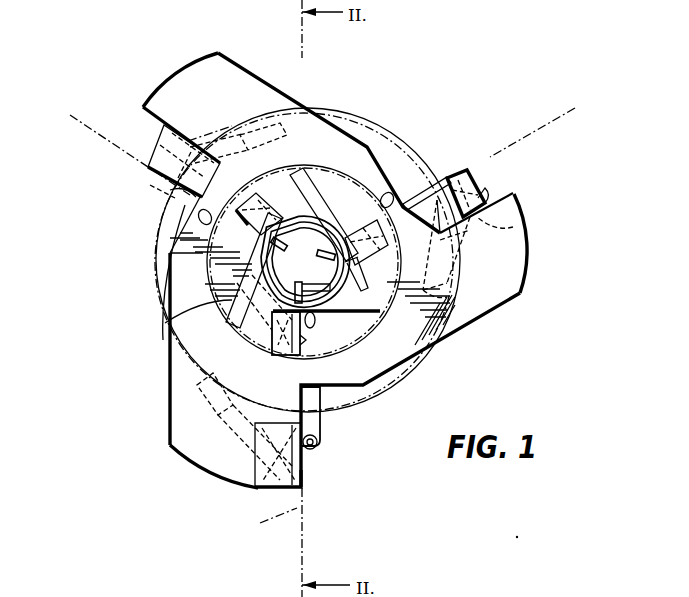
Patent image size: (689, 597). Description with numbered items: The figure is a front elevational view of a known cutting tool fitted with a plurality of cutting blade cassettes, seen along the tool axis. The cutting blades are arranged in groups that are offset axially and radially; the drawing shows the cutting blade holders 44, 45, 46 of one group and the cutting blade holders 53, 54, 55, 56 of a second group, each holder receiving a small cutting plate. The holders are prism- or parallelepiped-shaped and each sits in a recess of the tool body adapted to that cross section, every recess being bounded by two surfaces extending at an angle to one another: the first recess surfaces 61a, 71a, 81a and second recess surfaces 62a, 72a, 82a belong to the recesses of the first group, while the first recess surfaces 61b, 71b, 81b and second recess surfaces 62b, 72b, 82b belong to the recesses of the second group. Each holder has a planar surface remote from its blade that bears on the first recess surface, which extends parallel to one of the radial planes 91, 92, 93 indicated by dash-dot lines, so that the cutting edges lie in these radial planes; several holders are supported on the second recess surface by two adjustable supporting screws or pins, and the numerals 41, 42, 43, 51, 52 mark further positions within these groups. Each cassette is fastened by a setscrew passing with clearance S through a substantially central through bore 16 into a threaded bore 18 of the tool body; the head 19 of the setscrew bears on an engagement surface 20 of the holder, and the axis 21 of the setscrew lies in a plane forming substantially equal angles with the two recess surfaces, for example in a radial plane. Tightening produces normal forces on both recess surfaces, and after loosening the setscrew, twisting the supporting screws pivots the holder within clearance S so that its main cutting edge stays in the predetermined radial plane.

The first recess surface 61b is at (141, 110).
The head of setscrew 19 is at (163, 153).
The clearance S is at (195, 130).
The radial plane 91 is at (67, 140).
The cutting blade holder 56 is at (125, 165).
The cutting blade holder 53 is at (167, 190).
The second recess surface 62b is at (177, 207).
The second recess surface 62a is at (170, 320).
The first recess surface 61a is at (258, 202).
The second recess surface 72a is at (328, 200).
The cutting blade holder 44 is at (356, 212).
The cutting blade holder 45 is at (337, 340).
The screw 41 is at (405, 215).
The second recess surface 72b is at (420, 193).
The clamp block 51 is at (452, 177).
The cutting blade holder 54 is at (478, 162).
The radial plane 92 is at (557, 110).
The engagement surface 20 is at (500, 193).
The first recess surface 71b is at (503, 190).
The central through bore 16 is at (513, 227).
The axis of setscrew 21 is at (447, 277).
The threaded bore 18 is at (447, 297).
The hatch region 43 is at (240, 246).
The cutting blade holder 46 is at (214, 295).
The first recess surface 81a is at (272, 347).
The pin 42 is at (297, 356).
The second recess surface 82a is at (318, 346).
The first recess surface 71a is at (408, 305).
The second recess surface 82b is at (301, 420).
The pin 52 is at (304, 462).
The cutting blade holder 55 is at (310, 484).
The first recess surface 81b is at (255, 457).
The radial plane 93 is at (260, 523).